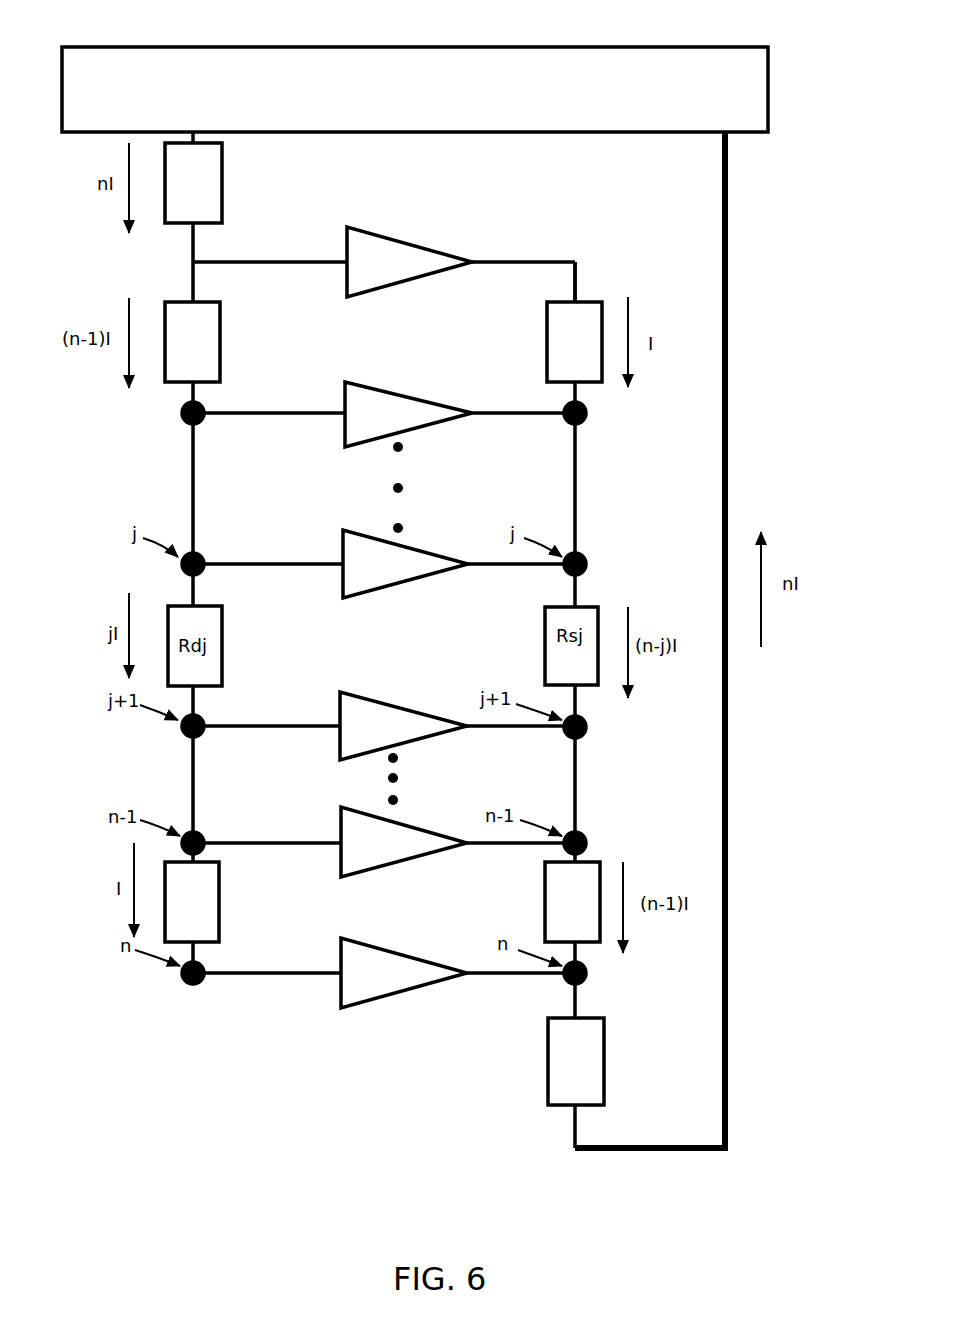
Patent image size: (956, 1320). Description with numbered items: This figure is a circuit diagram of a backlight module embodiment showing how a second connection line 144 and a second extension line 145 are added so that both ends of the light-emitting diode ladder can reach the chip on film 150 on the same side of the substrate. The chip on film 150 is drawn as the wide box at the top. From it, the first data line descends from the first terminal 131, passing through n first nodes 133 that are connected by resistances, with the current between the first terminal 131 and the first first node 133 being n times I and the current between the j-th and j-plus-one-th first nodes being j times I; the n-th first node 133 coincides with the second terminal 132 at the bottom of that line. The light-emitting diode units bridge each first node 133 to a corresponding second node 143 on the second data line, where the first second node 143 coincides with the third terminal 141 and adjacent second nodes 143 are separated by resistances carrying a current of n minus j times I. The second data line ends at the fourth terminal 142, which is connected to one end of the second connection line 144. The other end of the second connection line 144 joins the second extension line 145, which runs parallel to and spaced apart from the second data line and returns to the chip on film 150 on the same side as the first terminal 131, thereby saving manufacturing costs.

The chip on film 150 is at (428, 55).
The first terminal 131 is at (190, 128).
The first nodes 133 is at (183, 411).
The third terminal 141 is at (576, 260).
The second nodes 143 is at (585, 410).
The second terminal 132 is at (184, 978).
The fourth terminal 142 is at (575, 1146).
The second connection line 144 is at (664, 1152).
The second extension line 145 is at (727, 878).